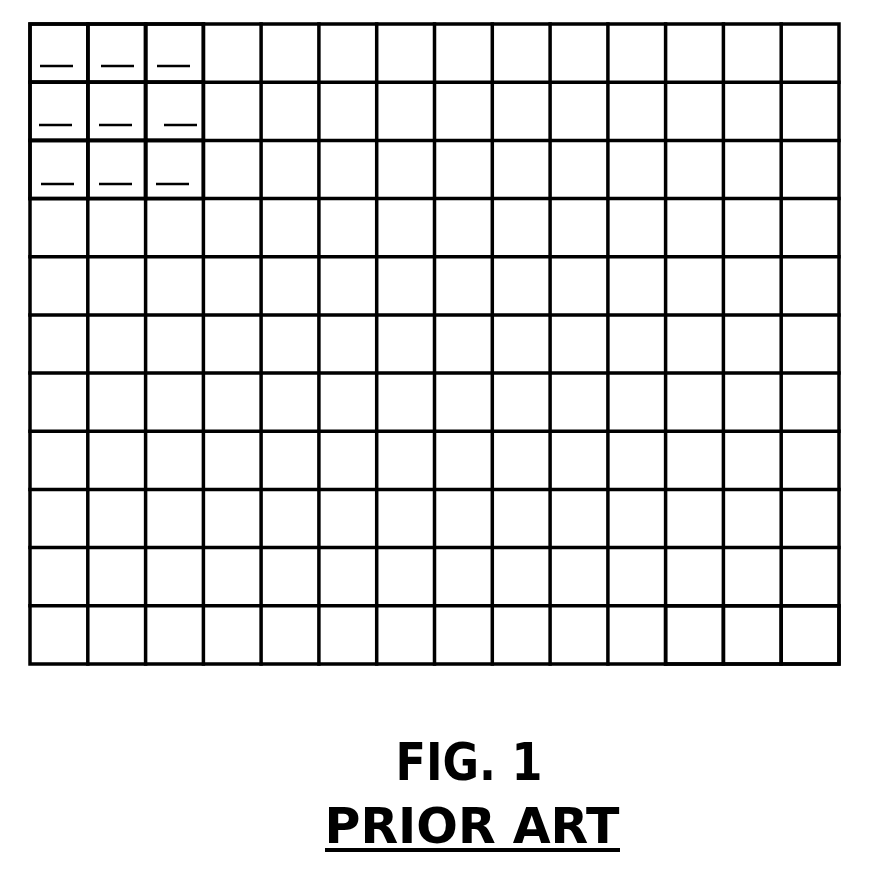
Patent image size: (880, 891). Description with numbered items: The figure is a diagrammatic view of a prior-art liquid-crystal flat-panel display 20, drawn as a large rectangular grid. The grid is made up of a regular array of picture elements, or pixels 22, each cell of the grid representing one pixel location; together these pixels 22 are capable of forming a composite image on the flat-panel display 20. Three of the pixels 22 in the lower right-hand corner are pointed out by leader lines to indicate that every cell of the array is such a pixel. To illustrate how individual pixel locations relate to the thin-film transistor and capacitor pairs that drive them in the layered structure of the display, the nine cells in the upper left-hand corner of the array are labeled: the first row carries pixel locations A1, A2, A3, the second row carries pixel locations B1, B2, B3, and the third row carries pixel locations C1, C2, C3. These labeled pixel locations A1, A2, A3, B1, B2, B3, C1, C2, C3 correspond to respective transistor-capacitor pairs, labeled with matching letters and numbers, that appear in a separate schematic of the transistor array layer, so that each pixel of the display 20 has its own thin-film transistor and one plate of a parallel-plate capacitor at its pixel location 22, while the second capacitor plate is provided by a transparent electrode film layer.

The flat-panel display 20 is at (434, 400).
The pixels 22 is at (695, 653).
The pixel location A1 is at (59, 53).
The pixel location A2 is at (117, 53).
The pixel location A3 is at (175, 53).
The pixel location B1 is at (59, 111).
The pixel location B2 is at (117, 111).
The pixel location B3 is at (175, 111).
The pixel location C1 is at (59, 169).
The pixel location C2 is at (117, 169).
The pixel location C3 is at (175, 169).